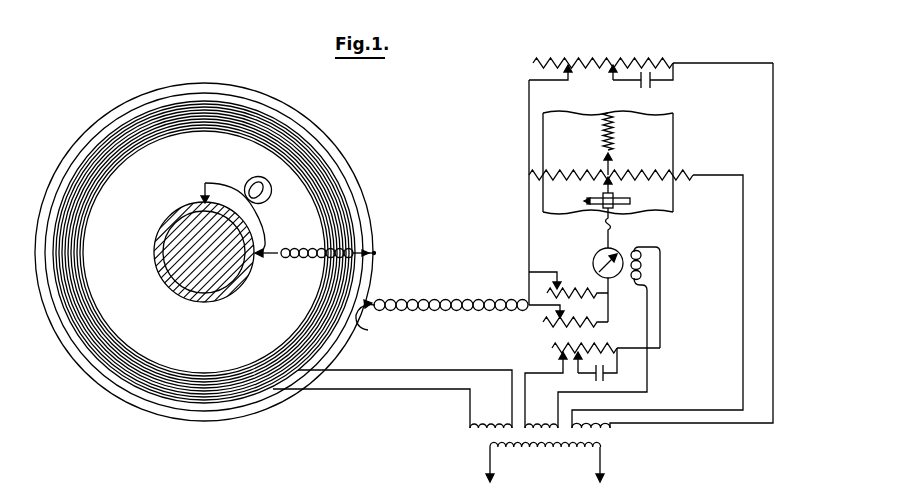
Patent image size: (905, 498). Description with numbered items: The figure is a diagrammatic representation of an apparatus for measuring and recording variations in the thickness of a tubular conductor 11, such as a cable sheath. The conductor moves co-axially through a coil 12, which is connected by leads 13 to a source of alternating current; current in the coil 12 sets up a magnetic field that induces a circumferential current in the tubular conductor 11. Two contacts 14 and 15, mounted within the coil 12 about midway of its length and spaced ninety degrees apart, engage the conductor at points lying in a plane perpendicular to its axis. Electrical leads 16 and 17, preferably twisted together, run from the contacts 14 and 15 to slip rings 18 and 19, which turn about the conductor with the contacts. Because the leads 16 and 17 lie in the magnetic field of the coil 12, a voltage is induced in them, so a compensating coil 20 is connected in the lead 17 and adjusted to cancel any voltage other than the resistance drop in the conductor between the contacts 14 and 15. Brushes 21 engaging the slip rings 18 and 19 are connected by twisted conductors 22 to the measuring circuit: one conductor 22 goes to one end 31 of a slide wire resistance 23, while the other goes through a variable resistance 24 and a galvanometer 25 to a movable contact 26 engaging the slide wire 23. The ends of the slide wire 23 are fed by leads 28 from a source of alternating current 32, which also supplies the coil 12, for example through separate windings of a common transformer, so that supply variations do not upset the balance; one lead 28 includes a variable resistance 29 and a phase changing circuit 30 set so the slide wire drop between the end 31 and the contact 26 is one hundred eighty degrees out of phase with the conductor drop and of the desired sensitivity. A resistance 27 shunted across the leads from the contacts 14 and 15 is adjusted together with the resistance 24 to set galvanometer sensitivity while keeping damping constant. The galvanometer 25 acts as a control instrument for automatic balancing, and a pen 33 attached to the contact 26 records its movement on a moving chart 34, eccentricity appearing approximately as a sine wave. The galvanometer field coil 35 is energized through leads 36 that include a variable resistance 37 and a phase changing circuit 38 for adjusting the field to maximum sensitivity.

The tubular conductor 11 is at (212, 302).
The coil 12 is at (78, 257).
The leads 13 is at (390, 389).
The contact 14 is at (259, 260).
The contact 15 is at (205, 183).
The electrical lead 16 is at (292, 265).
The electrical lead 17 is at (262, 222).
The slip ring 18 is at (360, 215).
The slip ring 19 is at (372, 236).
The compensating coil 20 is at (272, 165).
The brushes 21 is at (374, 323).
The conductors 22 is at (428, 292).
The slide wire resistance 23 is at (581, 171).
The variable resistance 24 is at (545, 327).
The galvanometer 25 is at (616, 278).
The contact 26 is at (613, 194).
The resistance 27 is at (575, 288).
The leads 28 is at (773, 305).
The variable resistance 29 is at (568, 62).
The phase changing circuit 30 is at (660, 83).
The end of slide wire resistance 31 is at (530, 176).
The source of alternating current 32 is at (482, 441).
The pen 33 is at (610, 168).
The chart 34 is at (673, 143).
The galvanometer field coil 35 is at (640, 267).
The leads 36 is at (648, 347).
The variable resistance 37 is at (587, 348).
The phase changing circuit 38 is at (617, 375).